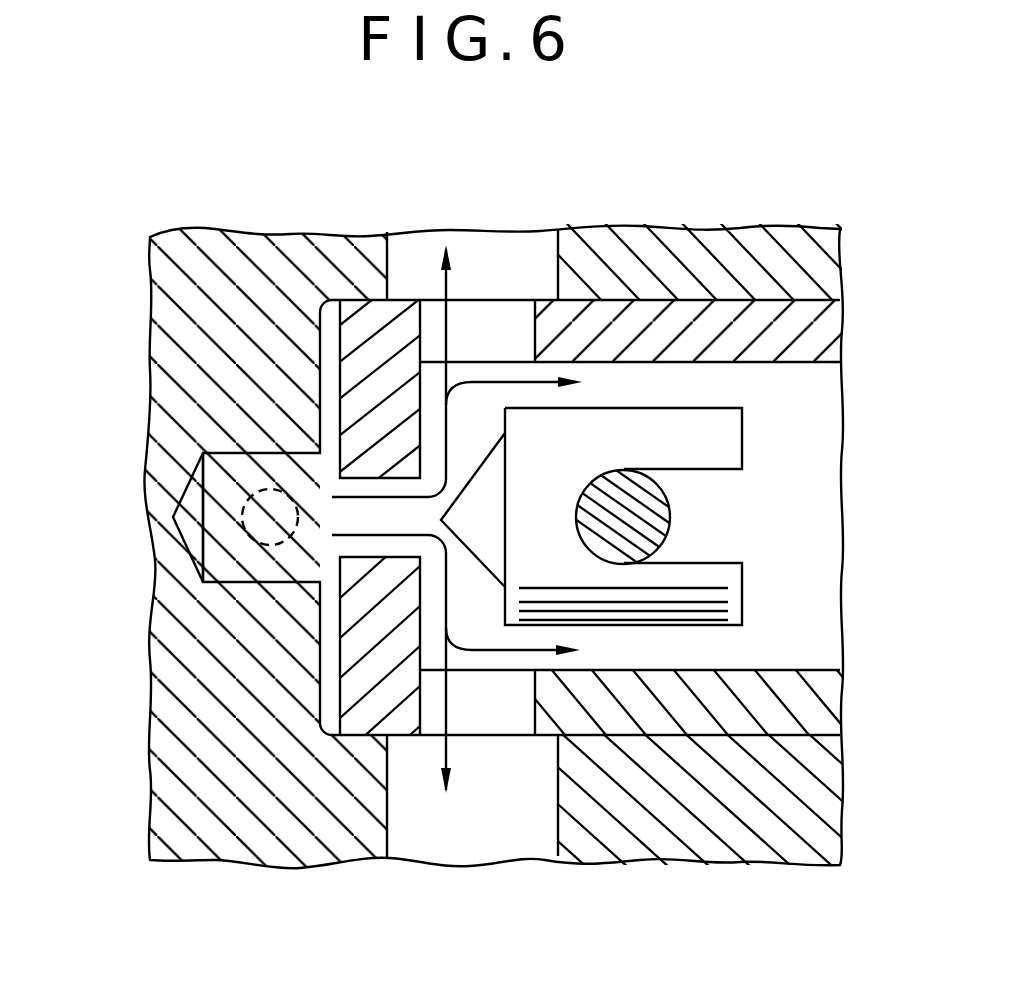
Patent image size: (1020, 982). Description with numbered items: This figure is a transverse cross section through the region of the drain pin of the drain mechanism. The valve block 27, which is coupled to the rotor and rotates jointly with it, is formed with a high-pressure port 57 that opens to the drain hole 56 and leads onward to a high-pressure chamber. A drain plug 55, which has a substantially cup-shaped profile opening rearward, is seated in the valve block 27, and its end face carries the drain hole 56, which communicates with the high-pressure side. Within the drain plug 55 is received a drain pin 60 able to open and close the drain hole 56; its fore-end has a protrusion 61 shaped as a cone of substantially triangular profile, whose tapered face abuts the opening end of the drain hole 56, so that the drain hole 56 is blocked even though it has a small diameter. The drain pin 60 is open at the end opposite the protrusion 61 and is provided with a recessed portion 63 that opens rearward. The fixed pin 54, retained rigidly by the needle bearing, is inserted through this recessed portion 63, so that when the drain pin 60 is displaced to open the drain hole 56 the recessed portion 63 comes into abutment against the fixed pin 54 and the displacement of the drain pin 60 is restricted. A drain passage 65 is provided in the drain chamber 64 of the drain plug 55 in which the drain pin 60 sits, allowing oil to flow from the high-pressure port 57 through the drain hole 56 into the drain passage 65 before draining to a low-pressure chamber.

The valve block 27 is at (277, 817).
The fixed pin 54 is at (638, 517).
The drain plug 55 is at (800, 712).
The drain hole 56 is at (353, 540).
The high-pressure port 57 is at (225, 495).
The drain pin 60 is at (695, 433).
The protrusion 61 is at (452, 515).
The recessed portion 63 is at (717, 562).
The drain chamber 64 is at (678, 645).
The drain passage 65 is at (558, 793).